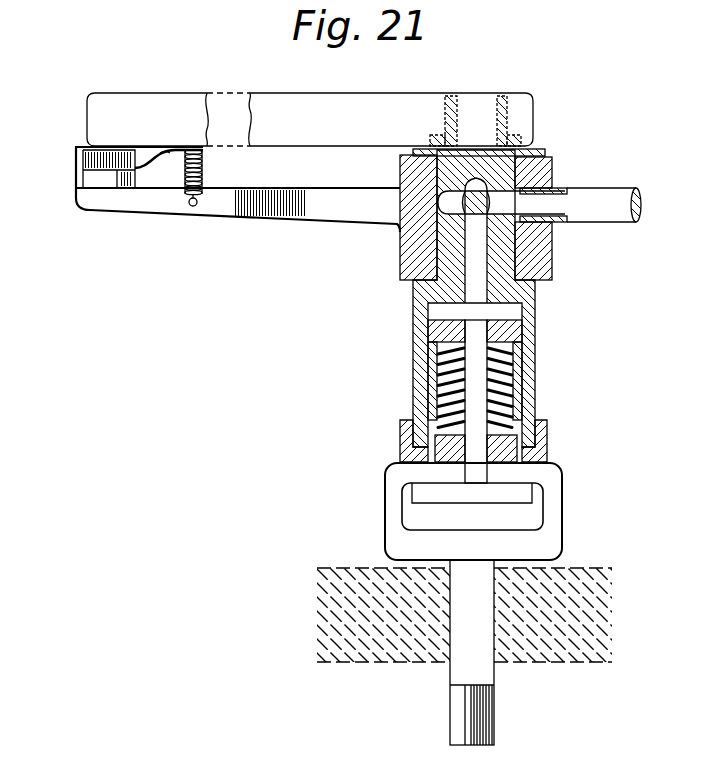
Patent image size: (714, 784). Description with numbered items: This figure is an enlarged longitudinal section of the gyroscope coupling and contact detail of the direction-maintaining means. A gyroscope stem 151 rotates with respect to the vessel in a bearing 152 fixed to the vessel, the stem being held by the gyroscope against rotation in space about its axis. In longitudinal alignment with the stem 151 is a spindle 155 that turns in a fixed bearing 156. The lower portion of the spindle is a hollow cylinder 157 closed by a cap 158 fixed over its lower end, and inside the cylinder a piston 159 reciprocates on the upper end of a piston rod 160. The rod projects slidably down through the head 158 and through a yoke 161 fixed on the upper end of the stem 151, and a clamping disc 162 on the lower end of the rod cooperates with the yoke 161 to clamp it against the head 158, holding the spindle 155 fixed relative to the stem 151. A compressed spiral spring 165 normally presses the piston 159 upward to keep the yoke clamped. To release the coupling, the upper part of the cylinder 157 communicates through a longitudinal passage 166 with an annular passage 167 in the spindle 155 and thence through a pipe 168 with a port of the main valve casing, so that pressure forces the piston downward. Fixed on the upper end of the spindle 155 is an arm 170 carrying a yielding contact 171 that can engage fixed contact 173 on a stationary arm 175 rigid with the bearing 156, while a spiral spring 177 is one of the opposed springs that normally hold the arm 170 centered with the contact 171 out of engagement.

The stem 151 is at (462, 662).
The bearing 152 is at (527, 648).
The spindle 155 is at (450, 279).
The fixed bearing 156 is at (535, 257).
The hollow cylinder 157 is at (527, 366).
The cap 158 is at (537, 451).
The piston 159 is at (500, 337).
The piston rod 160 is at (472, 400).
The yoke 161 is at (392, 504).
The clamping disc 162 is at (480, 493).
The compressed spiral spring 165 is at (430, 387).
The longitudinal passage 166 is at (475, 247).
The annular passage 167 is at (452, 203).
The pipe 168 is at (586, 197).
The arm 170 is at (308, 103).
The yielding contact 171 is at (148, 158).
The fixed contact 173 is at (100, 178).
The arm 175 is at (253, 206).
The spiral spring 177 is at (203, 168).